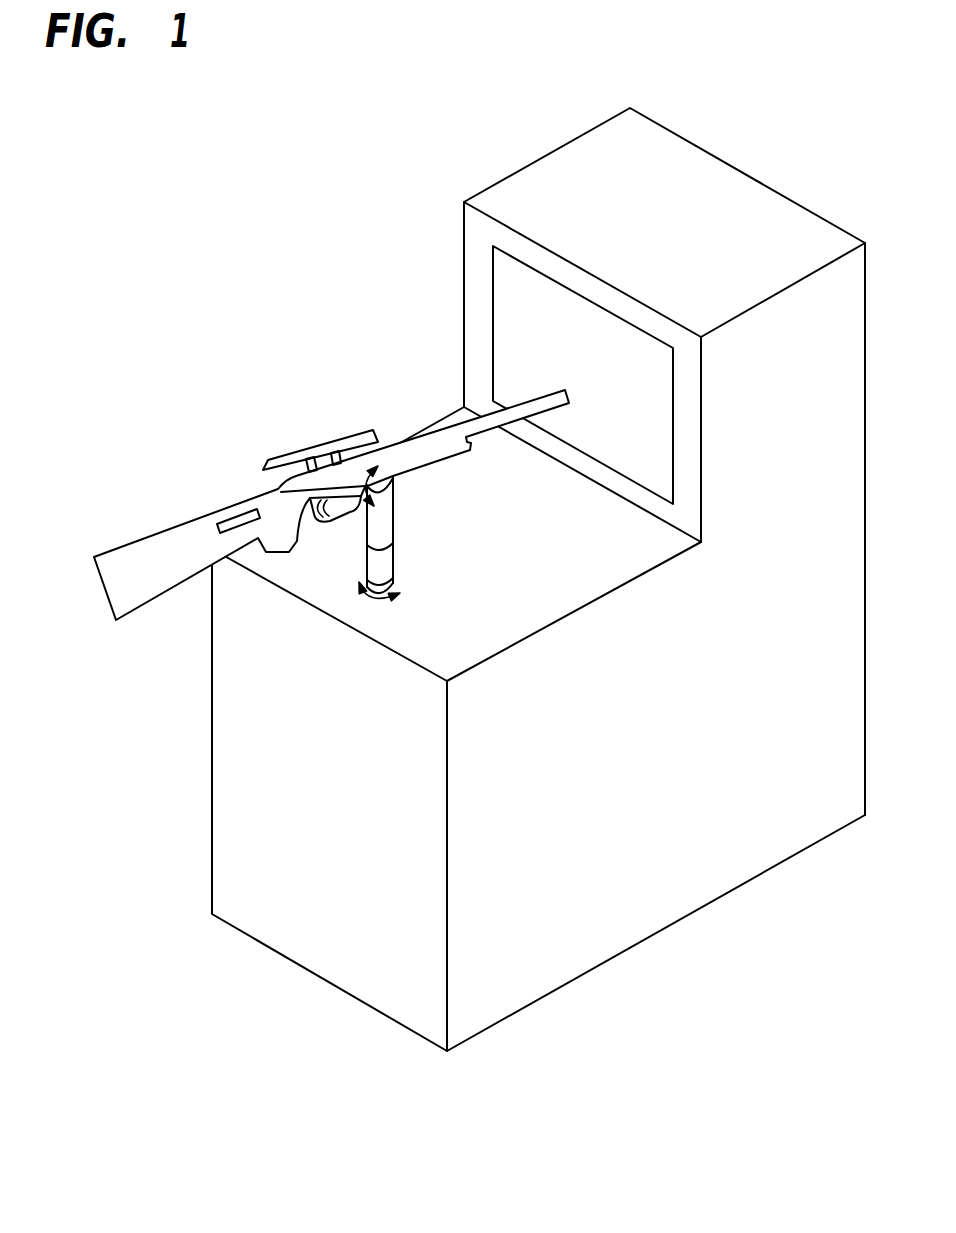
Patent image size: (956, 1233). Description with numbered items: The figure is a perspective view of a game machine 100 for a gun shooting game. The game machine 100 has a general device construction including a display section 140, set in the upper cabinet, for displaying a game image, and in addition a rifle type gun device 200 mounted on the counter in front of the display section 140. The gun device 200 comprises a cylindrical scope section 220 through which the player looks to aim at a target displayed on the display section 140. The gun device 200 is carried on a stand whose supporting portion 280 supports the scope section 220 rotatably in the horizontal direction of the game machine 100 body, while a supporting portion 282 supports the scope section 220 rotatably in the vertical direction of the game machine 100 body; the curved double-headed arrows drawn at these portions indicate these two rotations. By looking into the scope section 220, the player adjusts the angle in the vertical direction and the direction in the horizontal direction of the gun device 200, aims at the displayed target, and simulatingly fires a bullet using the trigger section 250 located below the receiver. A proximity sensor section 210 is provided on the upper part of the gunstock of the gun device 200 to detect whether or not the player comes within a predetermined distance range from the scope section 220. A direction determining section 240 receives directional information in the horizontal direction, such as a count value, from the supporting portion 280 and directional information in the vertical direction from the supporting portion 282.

The game machine 100 is at (731, 93).
The display section 140 is at (510, 310).
The gun device 200 is at (362, 410).
The proximity sensor section 210 is at (237, 517).
The scope section 220 is at (277, 458).
The direction determining section 240 is at (393, 560).
The trigger section 250 is at (325, 520).
The supporting portion 280 is at (395, 585).
The supporting portion 282 is at (396, 487).